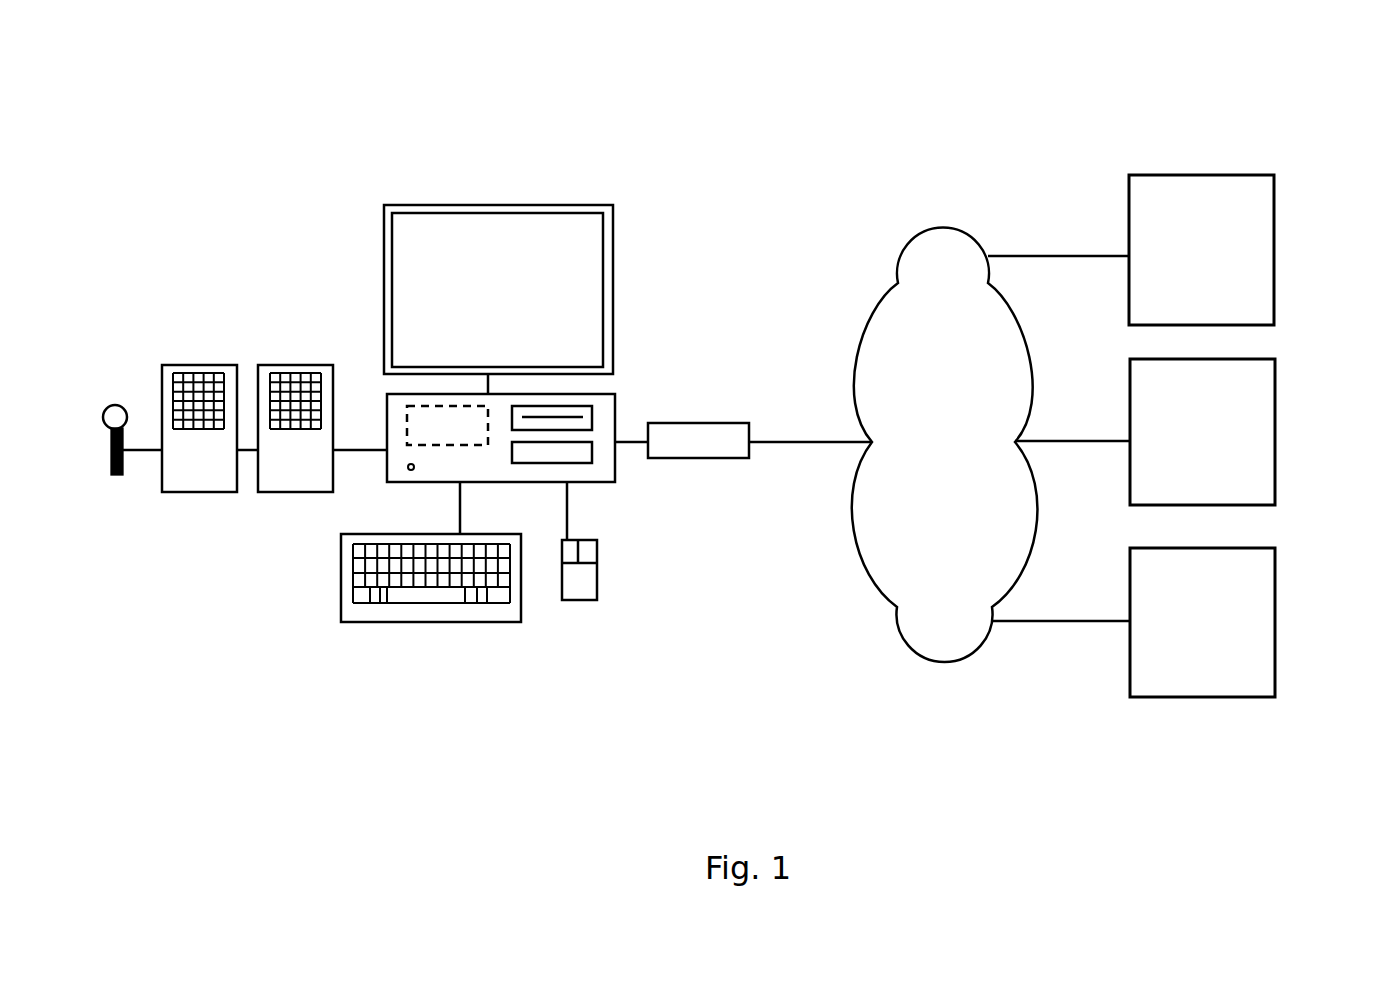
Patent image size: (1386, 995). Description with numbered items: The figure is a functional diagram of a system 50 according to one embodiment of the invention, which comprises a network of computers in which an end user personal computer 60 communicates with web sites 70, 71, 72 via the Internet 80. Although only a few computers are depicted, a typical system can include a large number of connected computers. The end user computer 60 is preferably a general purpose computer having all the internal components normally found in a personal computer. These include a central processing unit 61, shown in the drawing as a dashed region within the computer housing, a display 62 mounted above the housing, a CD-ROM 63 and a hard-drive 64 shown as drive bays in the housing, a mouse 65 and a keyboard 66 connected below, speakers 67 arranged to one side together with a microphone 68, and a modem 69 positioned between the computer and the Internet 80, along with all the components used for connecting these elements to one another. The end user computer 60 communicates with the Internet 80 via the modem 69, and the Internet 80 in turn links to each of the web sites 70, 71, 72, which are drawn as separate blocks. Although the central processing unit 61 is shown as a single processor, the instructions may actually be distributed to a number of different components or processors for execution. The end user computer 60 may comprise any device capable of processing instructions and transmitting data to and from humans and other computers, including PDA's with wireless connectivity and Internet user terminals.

The system 50 is at (973, 56).
The end user personal computer 60 is at (474, 97).
The central processing unit 61 is at (413, 410).
The display 62 is at (607, 263).
The CD-ROM 63 is at (592, 417).
The hard-drive 64 is at (588, 463).
The mouse 65 is at (597, 593).
The keyboard 66 is at (462, 622).
The speakers 67 is at (241, 294).
The microphone 68 is at (98, 485).
The modem 69 is at (715, 428).
The web site 70 is at (1273, 259).
The web site 71 is at (1275, 438).
The web site 72 is at (1275, 620).
The Internet 80 is at (945, 444).